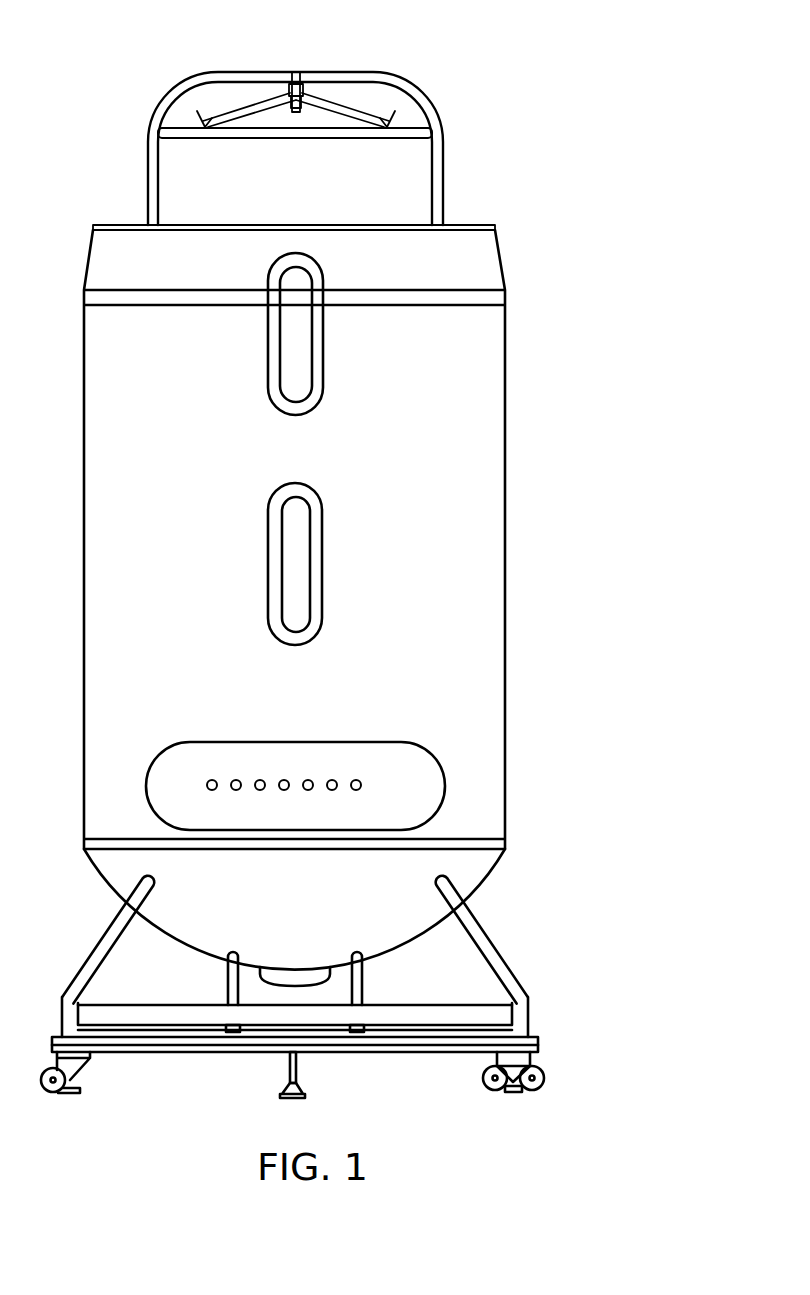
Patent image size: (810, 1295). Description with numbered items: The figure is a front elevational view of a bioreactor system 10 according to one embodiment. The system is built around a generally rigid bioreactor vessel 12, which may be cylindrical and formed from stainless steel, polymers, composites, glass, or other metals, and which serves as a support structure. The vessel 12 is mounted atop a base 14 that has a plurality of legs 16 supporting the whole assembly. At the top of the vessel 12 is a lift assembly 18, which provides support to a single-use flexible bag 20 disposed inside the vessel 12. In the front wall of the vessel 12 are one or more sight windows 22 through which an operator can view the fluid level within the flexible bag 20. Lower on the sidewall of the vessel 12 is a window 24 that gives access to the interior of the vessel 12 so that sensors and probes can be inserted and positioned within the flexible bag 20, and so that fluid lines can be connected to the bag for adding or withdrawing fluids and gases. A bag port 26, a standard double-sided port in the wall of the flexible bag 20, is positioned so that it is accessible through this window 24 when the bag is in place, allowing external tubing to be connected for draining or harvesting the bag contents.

The bioreactor system 10 is at (422, 62).
The bioreactor vessel 12 is at (487, 343).
The base 14 is at (543, 997).
The legs 16 is at (97, 958).
The lift assembly 18 is at (145, 110).
The flexible bag 20 is at (165, 782).
The sight windows 22 is at (293, 342).
The window 24 is at (397, 782).
The bag port 26 is at (212, 775).